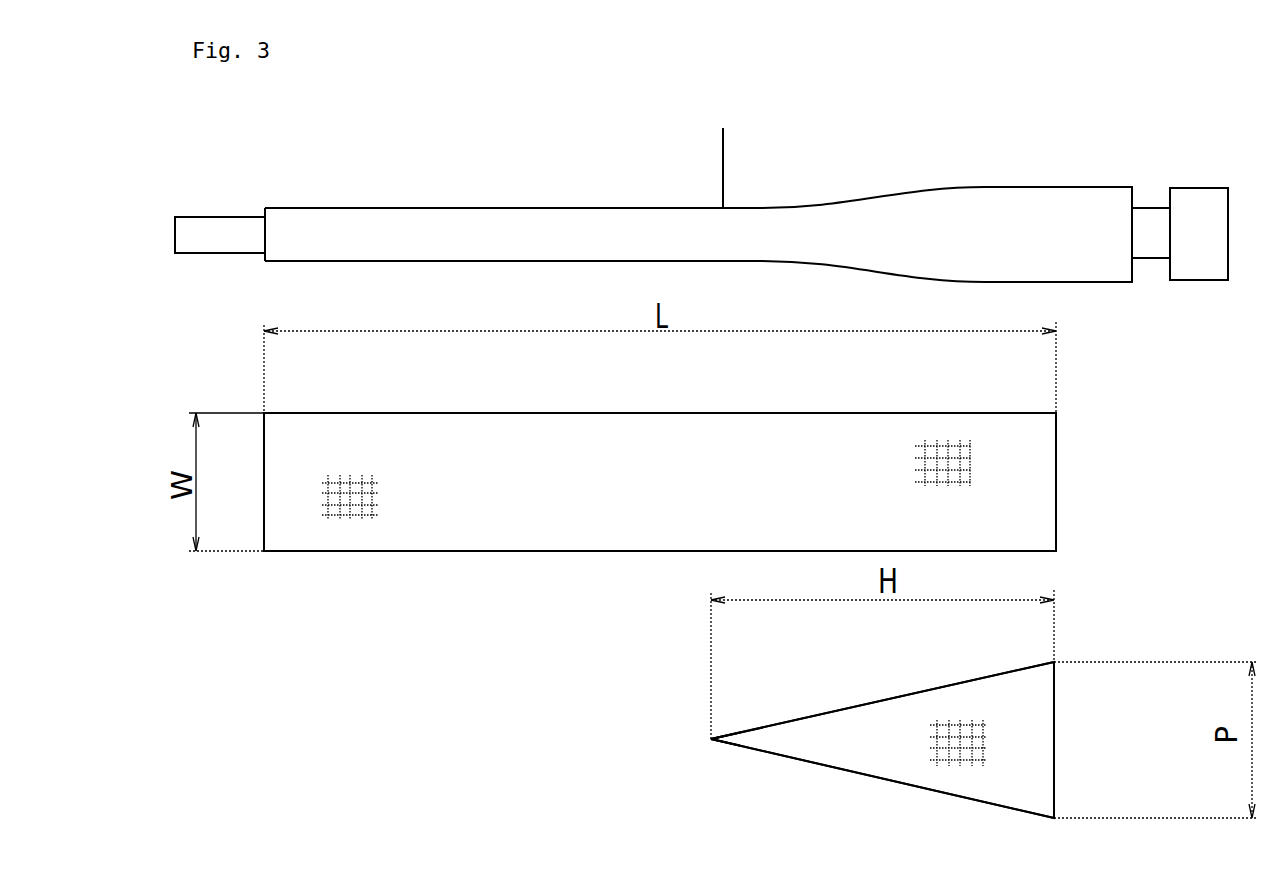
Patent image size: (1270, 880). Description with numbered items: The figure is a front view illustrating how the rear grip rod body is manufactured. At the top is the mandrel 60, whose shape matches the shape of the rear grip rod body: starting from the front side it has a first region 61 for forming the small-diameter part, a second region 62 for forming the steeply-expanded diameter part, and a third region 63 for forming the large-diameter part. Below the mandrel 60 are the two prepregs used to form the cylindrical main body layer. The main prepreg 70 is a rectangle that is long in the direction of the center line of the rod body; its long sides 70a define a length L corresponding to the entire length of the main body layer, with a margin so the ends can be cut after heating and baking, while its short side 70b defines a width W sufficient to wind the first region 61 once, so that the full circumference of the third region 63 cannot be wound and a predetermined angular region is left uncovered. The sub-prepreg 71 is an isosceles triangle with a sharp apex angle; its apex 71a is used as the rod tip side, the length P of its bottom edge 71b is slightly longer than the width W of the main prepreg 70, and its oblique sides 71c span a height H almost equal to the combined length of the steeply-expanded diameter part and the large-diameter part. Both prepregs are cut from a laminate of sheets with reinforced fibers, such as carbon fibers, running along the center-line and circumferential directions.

The mandrel 60 is at (1197, 188).
The first region 61 is at (723, 135).
The second region 62 is at (993, 187).
The third region 63 is at (1132, 187).
The main prepreg 70 is at (1087, 453).
The long side of main prepreg 70a is at (592, 413).
The short side of main prepreg 70b is at (1056, 492).
The sub-prepreg 71 is at (772, 772).
The apex 71a is at (707, 742).
The bottom edge 71b is at (1057, 745).
The oblique side of sub-prepreg 71c is at (893, 699).